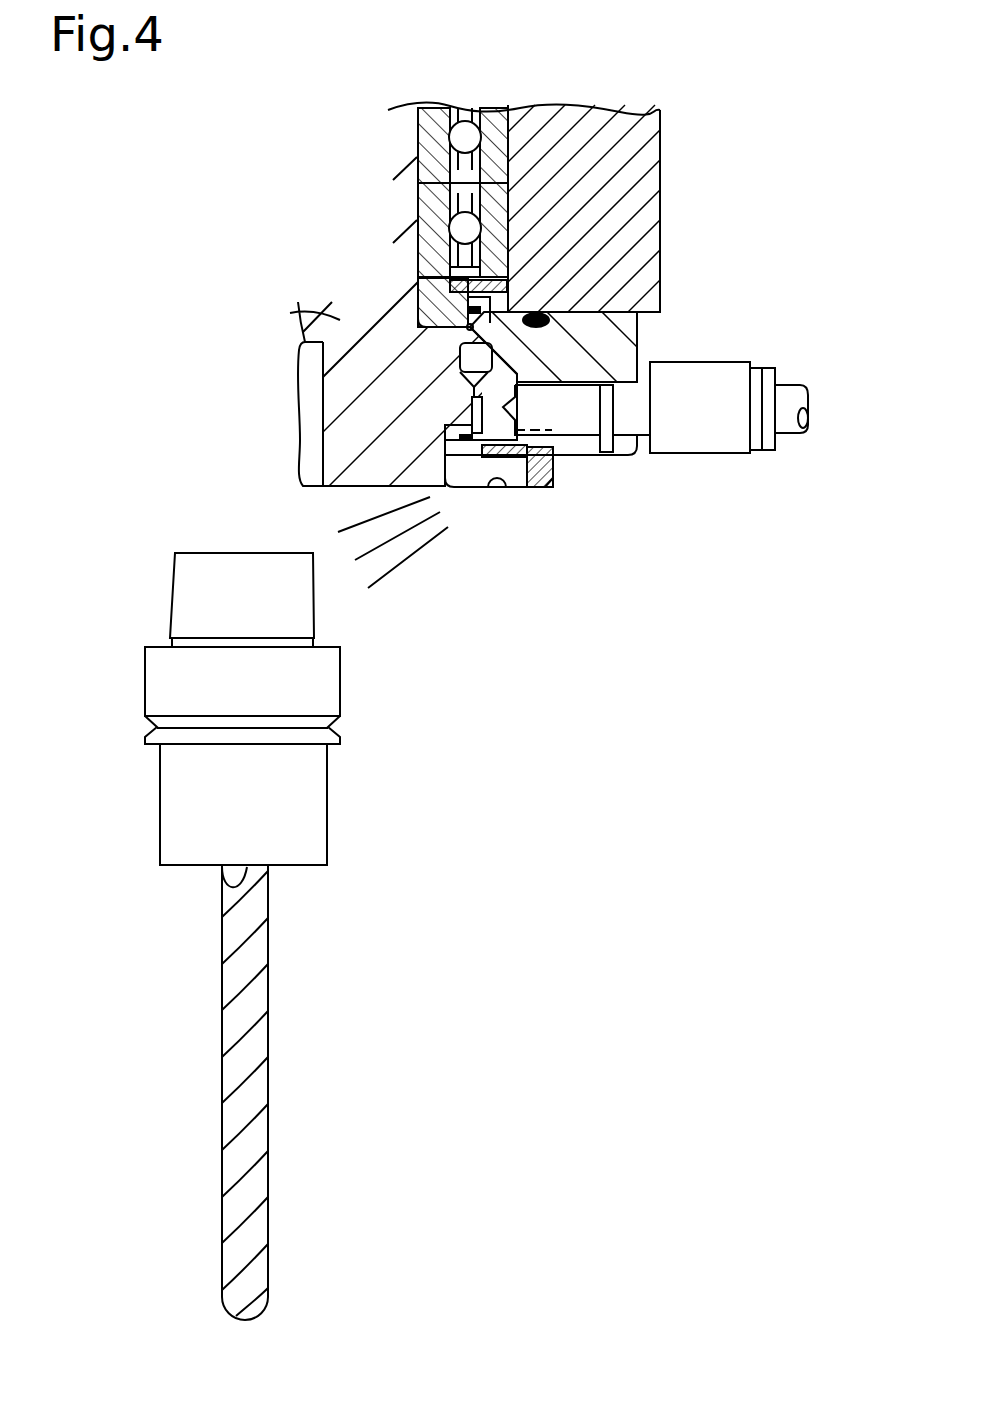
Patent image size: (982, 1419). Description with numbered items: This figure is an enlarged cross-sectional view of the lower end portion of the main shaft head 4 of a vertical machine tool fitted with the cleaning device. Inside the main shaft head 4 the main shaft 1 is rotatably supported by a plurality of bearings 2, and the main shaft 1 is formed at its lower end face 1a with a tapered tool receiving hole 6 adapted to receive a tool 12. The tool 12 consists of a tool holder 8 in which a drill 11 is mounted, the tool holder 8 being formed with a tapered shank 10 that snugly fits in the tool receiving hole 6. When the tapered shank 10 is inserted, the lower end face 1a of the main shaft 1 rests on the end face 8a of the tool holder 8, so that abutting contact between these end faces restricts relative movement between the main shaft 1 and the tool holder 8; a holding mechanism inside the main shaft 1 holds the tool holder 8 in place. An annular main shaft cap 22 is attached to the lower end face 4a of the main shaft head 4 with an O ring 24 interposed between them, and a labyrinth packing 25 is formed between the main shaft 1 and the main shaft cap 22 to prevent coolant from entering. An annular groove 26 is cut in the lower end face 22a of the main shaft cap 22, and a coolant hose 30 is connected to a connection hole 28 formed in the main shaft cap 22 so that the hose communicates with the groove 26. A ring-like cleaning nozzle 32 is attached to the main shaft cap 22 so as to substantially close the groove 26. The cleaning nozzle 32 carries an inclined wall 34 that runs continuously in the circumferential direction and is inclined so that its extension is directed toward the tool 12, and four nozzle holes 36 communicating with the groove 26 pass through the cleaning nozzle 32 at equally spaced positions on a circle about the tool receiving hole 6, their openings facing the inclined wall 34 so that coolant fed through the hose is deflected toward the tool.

The main shaft 1 is at (337, 320).
The lower end face 1a is at (355, 487).
The bearings 2 is at (507, 207).
The main shaft head 4 is at (643, 158).
The lower end face 4a is at (600, 317).
The tool receiving hole 6 is at (305, 430).
The tool holder 8 is at (312, 802).
The end face 8a is at (158, 647).
The tapered shank 10 is at (297, 612).
The drill 11 is at (255, 989).
The tool 12 is at (305, 941).
The main shaft cap 22 is at (618, 347).
The lower end face 22a is at (585, 423).
The O ring 24 is at (530, 292).
The labyrinth packing 25 is at (433, 361).
The annular groove 26 is at (548, 487).
The connection hole 28 is at (622, 455).
The coolant hose 30 is at (788, 426).
The cleaning nozzle 32 is at (538, 488).
The inclined wall 34 is at (483, 488).
The nozzle holes 36 is at (520, 488).